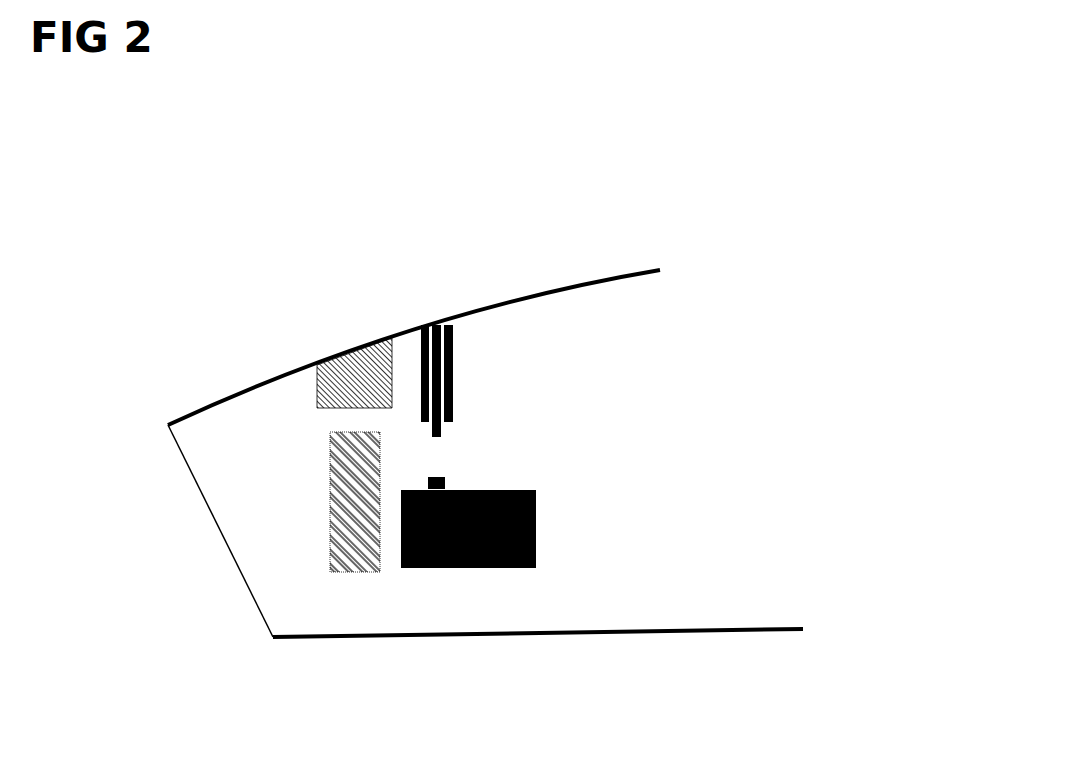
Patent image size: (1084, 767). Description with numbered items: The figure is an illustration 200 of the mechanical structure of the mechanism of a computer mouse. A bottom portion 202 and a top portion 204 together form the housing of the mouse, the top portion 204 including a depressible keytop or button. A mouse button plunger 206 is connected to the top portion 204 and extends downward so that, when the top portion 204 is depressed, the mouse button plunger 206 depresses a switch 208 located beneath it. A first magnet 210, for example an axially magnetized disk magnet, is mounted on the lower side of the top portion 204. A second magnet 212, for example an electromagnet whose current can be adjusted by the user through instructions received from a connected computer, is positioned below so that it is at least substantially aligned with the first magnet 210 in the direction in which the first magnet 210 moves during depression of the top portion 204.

The illustration 200 is at (864, 118).
The bottom portion 202 is at (578, 634).
The top portion 204 is at (577, 286).
The mouse button plunger 206 is at (451, 408).
The switch 208 is at (536, 492).
The first magnet 210 is at (345, 375).
The second magnet 212 is at (345, 458).